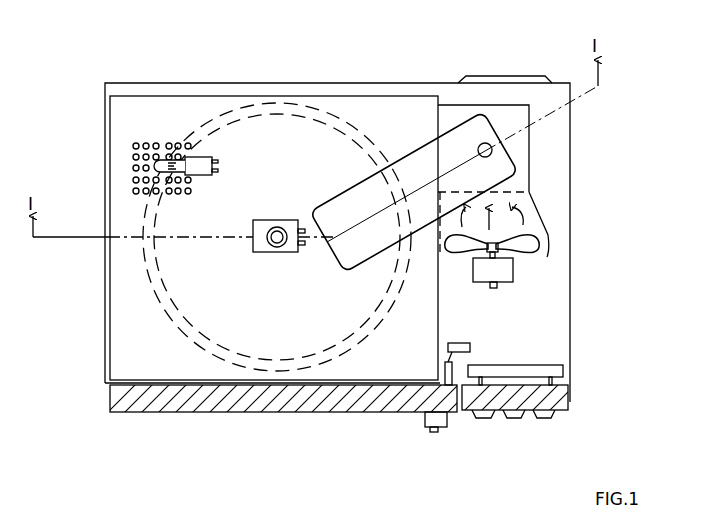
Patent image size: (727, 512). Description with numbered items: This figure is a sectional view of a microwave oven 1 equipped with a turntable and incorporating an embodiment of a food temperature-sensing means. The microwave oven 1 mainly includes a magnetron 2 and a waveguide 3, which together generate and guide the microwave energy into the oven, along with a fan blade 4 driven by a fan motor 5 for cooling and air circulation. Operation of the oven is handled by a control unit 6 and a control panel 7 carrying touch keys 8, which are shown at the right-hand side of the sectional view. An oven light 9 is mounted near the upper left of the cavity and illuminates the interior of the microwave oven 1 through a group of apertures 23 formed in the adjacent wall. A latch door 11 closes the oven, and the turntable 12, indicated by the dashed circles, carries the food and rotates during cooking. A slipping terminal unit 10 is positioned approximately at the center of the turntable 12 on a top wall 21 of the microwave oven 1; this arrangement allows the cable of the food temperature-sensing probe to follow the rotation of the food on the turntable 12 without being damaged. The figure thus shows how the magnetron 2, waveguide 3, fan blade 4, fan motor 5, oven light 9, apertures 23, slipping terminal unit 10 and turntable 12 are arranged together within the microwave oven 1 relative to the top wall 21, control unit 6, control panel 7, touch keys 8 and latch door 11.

The microwave oven 1 is at (122, 340).
The magnetron 2 is at (520, 170).
The waveguide 3 is at (466, 128).
The fan blade 4 is at (540, 243).
The fan motor 5 is at (513, 272).
The control unit 6 is at (563, 372).
The control panel 7 is at (560, 400).
The touch keys 8 is at (543, 418).
The oven light 9 is at (181, 147).
The slipping terminal unit 10 is at (272, 217).
The latch door 11 is at (152, 402).
The turntable 12 is at (228, 362).
The top wall 21 is at (395, 360).
The apertures 23 is at (132, 158).